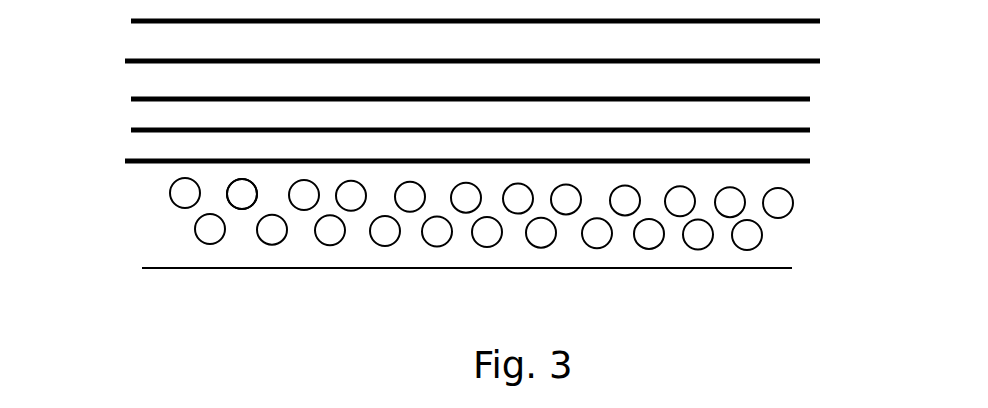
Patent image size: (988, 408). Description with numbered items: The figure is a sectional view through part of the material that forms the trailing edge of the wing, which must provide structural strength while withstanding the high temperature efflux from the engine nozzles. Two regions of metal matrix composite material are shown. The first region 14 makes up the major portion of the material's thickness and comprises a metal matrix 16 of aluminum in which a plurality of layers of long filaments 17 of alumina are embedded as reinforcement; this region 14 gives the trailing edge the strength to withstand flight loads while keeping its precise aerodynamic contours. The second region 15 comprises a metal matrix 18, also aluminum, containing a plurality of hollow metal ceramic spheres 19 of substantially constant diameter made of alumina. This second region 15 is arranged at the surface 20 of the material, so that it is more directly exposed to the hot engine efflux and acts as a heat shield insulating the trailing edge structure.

The first region 14 is at (468, 130).
The second region 15 is at (520, 262).
The metal matrix 16 is at (125, 45).
The long filaments 17 is at (118, 63).
The metal matrix 18 is at (145, 175).
The hollow metal ceramic spheres 19 is at (490, 240).
The surface 20 is at (468, 187).